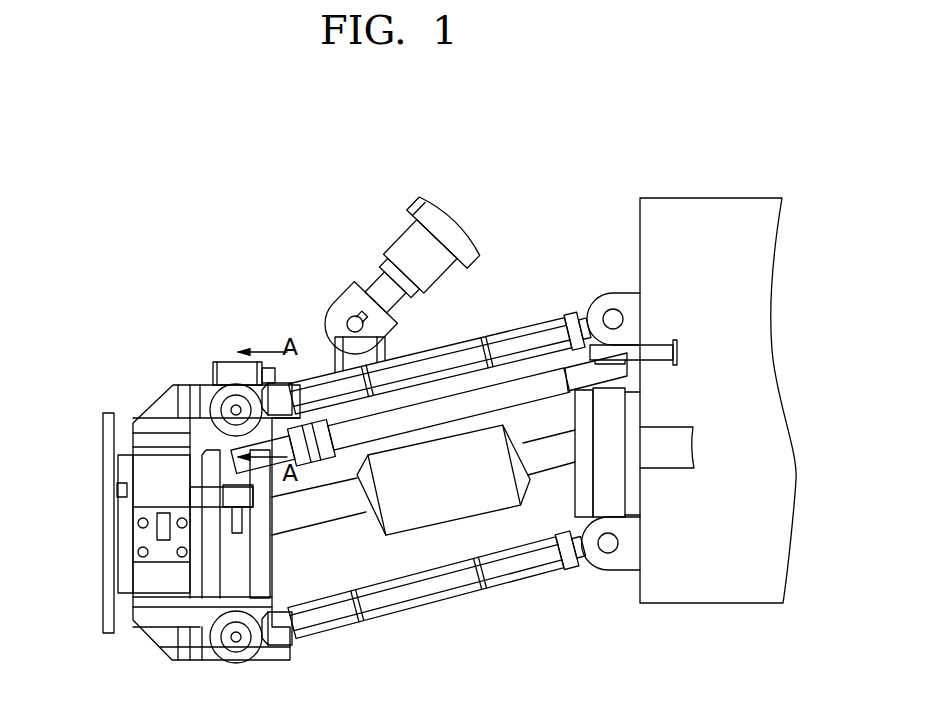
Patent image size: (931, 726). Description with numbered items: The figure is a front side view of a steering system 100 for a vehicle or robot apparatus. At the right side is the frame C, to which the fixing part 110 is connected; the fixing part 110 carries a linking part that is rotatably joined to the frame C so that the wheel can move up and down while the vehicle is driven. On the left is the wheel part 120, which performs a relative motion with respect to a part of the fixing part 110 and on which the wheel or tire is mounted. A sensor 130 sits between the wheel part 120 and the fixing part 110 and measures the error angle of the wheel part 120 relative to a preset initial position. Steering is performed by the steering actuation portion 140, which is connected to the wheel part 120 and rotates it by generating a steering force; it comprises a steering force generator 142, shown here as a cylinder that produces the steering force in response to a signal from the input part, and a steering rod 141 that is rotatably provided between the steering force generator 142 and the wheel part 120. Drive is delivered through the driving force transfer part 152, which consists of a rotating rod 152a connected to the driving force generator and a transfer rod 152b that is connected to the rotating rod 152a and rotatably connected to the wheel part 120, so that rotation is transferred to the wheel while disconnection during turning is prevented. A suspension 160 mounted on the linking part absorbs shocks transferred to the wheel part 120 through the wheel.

The steering system 100 is at (191, 188).
The fixing part 110 is at (322, 366).
The wheel part 120 is at (102, 643).
The sensor 130 is at (200, 359).
The steering actuation portion 140 is at (572, 140).
The steering rod 141 is at (566, 378).
The steering force generator 142 is at (662, 345).
The driving force transfer part 152 is at (578, 667).
The rotating rod 152a is at (665, 453).
The transfer rod 152b is at (465, 497).
The suspension 160 is at (403, 245).
The frame C is at (740, 510).